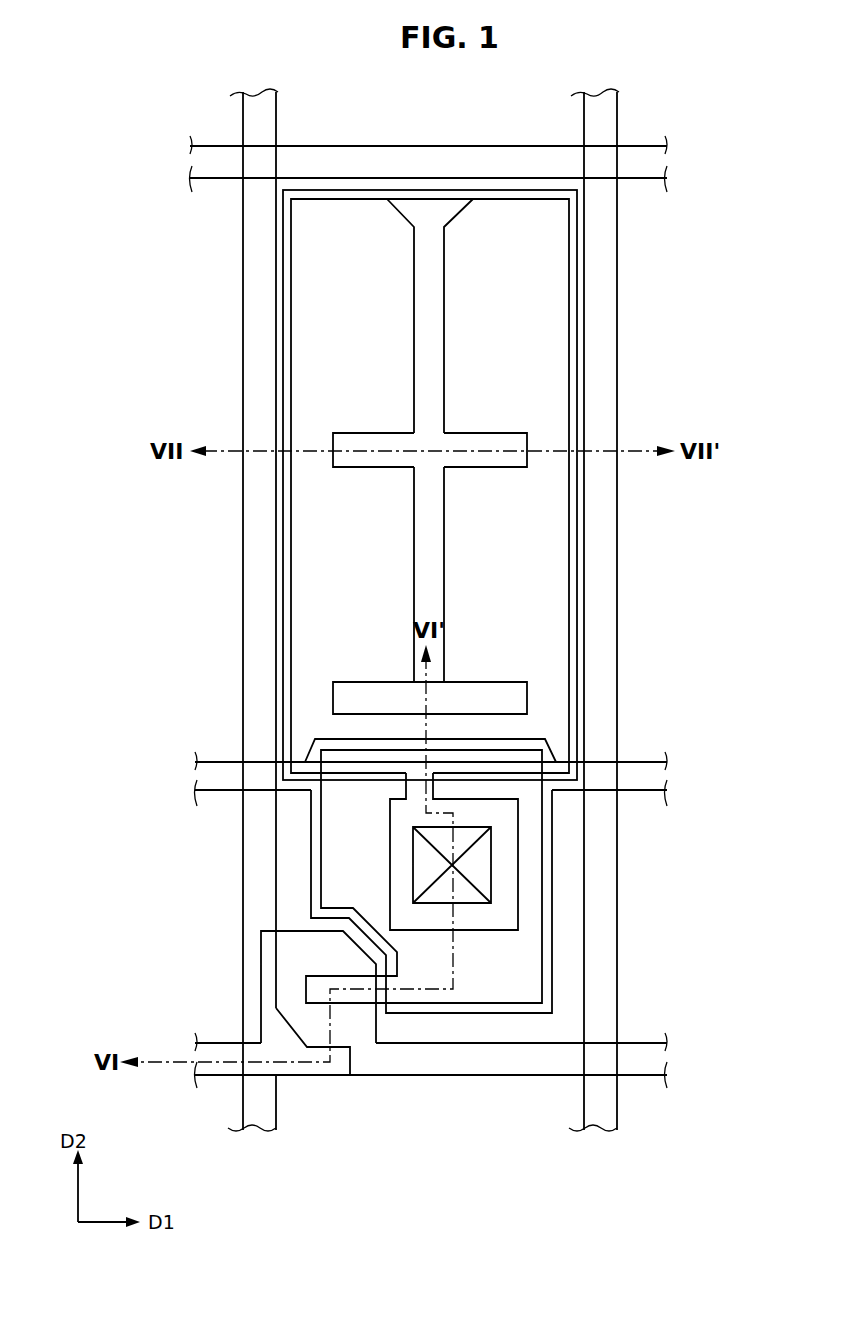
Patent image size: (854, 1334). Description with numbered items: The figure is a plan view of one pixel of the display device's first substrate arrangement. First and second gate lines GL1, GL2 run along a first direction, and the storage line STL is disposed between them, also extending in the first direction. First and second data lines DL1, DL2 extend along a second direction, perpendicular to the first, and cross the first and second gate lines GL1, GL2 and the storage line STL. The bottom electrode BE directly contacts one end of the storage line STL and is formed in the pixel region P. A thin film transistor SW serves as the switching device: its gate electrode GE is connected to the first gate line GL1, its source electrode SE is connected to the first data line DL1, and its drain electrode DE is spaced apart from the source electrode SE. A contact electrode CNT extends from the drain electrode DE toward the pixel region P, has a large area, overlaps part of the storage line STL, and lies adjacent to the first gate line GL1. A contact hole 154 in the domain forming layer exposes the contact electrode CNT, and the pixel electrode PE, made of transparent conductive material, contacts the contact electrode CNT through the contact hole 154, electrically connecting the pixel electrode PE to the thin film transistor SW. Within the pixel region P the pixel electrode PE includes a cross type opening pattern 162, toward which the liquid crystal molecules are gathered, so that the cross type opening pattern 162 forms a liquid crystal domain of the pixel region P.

The first data line DL1 is at (255, 947).
The second data line DL2 is at (612, 947).
The first gate line GL1 is at (552, 1066).
The second gate line GL2 is at (430, 160).
The storage line STL is at (215, 770).
The bottom electrode BE is at (583, 568).
The pixel electrode PE is at (548, 657).
The contact electrode CNT is at (533, 857).
The contact hole 154 is at (482, 880).
The pixel region P is at (430, 440).
The cross type opening pattern 162 is at (527, 441).
The source electrode SE is at (336, 1058).
The gate electrode GE is at (365, 1027).
The drain electrode DE is at (405, 1030).
The thin film transistor SW is at (422, 1208).